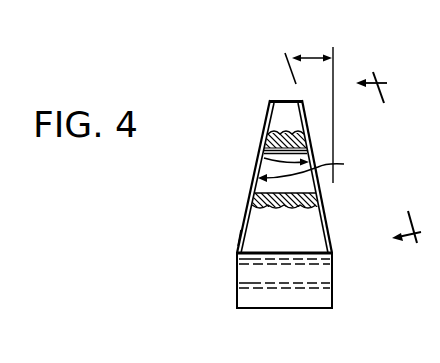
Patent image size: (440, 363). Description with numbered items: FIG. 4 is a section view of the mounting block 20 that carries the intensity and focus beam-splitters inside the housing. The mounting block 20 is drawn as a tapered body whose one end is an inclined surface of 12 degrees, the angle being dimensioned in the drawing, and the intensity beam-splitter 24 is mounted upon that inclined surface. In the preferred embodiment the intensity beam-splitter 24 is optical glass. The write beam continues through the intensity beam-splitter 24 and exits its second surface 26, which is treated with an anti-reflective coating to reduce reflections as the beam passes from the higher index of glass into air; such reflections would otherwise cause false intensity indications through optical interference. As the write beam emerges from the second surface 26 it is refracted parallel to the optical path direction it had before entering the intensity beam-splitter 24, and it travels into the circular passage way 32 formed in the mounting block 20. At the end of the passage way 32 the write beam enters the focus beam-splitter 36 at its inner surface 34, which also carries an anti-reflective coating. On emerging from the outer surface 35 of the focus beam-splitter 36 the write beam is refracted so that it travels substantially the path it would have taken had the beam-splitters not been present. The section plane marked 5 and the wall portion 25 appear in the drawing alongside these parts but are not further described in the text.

The mounting block 20 is at (245, 309).
The intensity beam-splitter 24 is at (332, 243).
The side wall 25 is at (335, 224).
The second surface 26 is at (257, 160).
The circular passage way 32 is at (310, 193).
The inner surface 34 is at (312, 167).
The outer surface 35 is at (243, 188).
The focus beam-splitter 36 is at (233, 241).
The section line 5- 5 is at (398, 156).
The 12 degree taper angle 12 is at (292, 64).